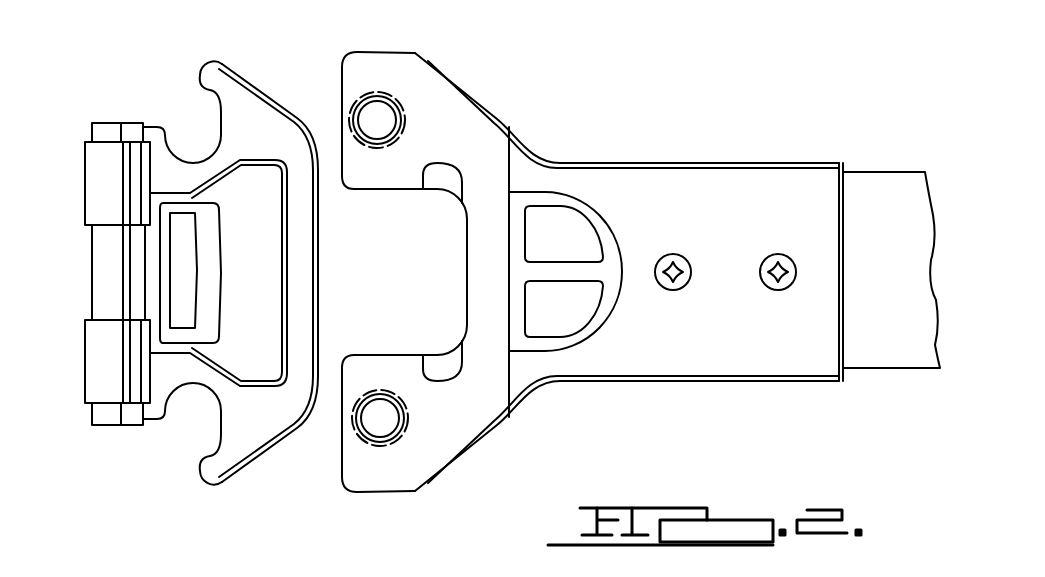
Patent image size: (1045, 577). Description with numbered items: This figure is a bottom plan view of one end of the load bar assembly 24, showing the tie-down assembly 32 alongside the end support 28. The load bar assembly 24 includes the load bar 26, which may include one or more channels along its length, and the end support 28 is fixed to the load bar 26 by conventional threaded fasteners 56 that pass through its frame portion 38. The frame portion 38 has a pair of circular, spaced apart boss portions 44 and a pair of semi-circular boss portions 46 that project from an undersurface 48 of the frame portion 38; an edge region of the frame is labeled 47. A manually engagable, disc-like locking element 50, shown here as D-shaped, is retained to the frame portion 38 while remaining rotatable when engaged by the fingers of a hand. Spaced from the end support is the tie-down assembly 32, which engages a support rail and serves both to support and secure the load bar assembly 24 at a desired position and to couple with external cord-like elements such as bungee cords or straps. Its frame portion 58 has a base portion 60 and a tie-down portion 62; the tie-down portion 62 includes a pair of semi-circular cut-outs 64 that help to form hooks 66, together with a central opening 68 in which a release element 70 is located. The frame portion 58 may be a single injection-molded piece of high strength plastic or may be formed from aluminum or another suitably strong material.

The load bar assembly 24 is at (708, 158).
The load bar 26 is at (876, 183).
The end support 28 is at (632, 370).
The tie-down assembly 32 is at (117, 436).
The frame portion 38 is at (737, 355).
The circular boss portions 44 is at (383, 112).
The semi-circular boss portions 46 is at (445, 183).
The tongue edge 47 is at (397, 355).
The undersurface 48 is at (445, 443).
The locking element 50 is at (553, 355).
The threaded fasteners 56 is at (767, 257).
The frame portion 58 is at (254, 440).
The base portion 60 is at (104, 270).
The tie-down portion 62 is at (243, 110).
The semi-circular cut-outs 64 is at (219, 120).
The hooks 66 is at (208, 82).
The central opening 68 is at (281, 257).
The release element 70 is at (213, 242).